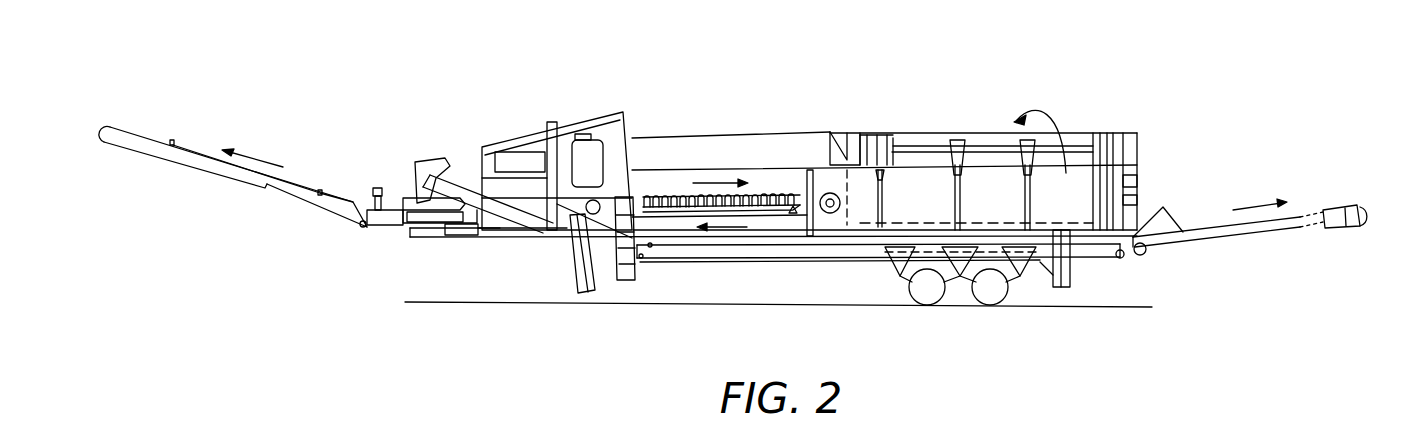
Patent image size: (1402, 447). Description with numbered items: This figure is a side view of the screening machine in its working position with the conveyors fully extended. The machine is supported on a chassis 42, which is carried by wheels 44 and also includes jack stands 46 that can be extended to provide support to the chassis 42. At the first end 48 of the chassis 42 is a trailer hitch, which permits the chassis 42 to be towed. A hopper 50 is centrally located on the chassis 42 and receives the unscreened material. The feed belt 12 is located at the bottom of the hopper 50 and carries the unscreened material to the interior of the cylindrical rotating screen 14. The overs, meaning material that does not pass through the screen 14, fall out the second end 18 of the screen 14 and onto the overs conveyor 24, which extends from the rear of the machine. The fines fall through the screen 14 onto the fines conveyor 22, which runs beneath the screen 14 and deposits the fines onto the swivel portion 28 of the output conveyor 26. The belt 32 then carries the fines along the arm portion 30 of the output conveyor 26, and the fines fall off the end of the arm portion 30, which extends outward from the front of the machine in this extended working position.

The feed belt 12 is at (753, 193).
The cylindrical rotating screen 14 is at (918, 143).
The second end of the screen 18 is at (1099, 163).
The fines conveyor 22 is at (812, 259).
The overs conveyor 24 is at (1241, 246).
The output conveyor 26 is at (300, 179).
The swivel portion 28 is at (405, 205).
The arm portion 30 is at (210, 152).
The belt 32 is at (155, 136).
The chassis 42 is at (783, 266).
The wheels 44 is at (984, 297).
The jack stands 46 is at (573, 282).
The first end of the chassis 48 is at (410, 236).
The hopper 50 is at (808, 143).